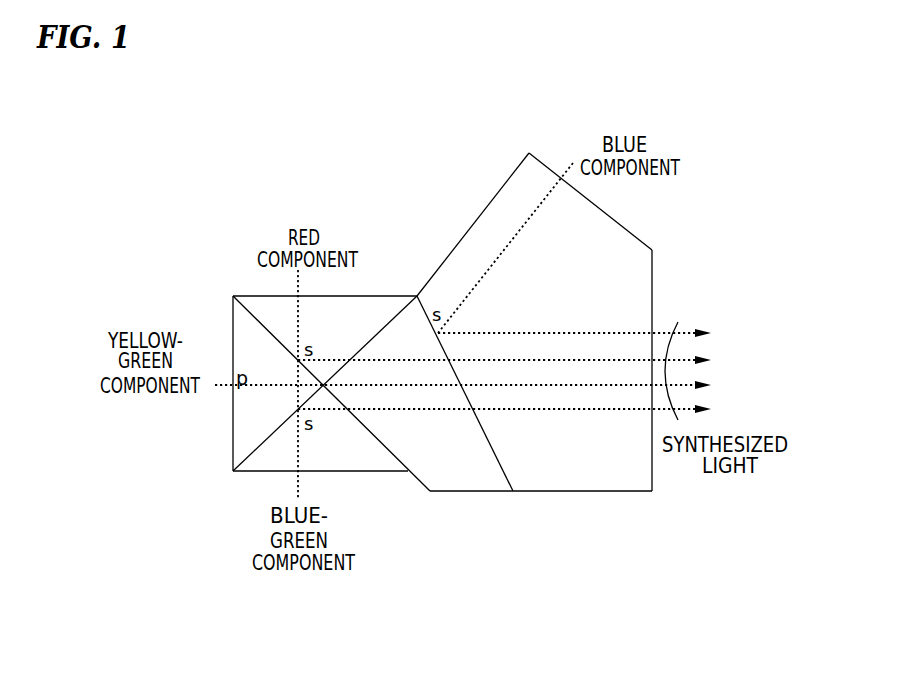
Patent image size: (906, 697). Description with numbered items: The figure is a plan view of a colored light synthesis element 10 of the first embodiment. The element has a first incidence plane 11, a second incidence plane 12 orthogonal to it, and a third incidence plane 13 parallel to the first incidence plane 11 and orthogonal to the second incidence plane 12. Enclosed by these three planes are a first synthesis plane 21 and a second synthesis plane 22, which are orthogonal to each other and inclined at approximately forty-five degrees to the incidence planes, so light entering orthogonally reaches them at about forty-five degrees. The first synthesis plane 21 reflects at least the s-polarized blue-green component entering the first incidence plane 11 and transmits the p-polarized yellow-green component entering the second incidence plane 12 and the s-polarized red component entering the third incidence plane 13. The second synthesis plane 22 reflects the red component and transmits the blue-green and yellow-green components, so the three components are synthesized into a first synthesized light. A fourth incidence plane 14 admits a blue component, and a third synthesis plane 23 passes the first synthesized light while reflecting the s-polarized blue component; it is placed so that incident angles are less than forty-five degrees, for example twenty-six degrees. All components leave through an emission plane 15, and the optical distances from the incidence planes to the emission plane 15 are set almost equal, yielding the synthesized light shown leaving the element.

The colored light synthesis element 10 is at (726, 174).
The first incidence plane 11 is at (245, 472).
The second incidence plane 12 is at (233, 457).
The third incidence plane 13 is at (253, 295).
The fourth incidence plane 14 is at (540, 162).
The emission plane 15 is at (653, 277).
The first synthesis plane 21 is at (270, 435).
The second synthesis plane 22 is at (383, 450).
The third synthesis plane 23 is at (498, 462).